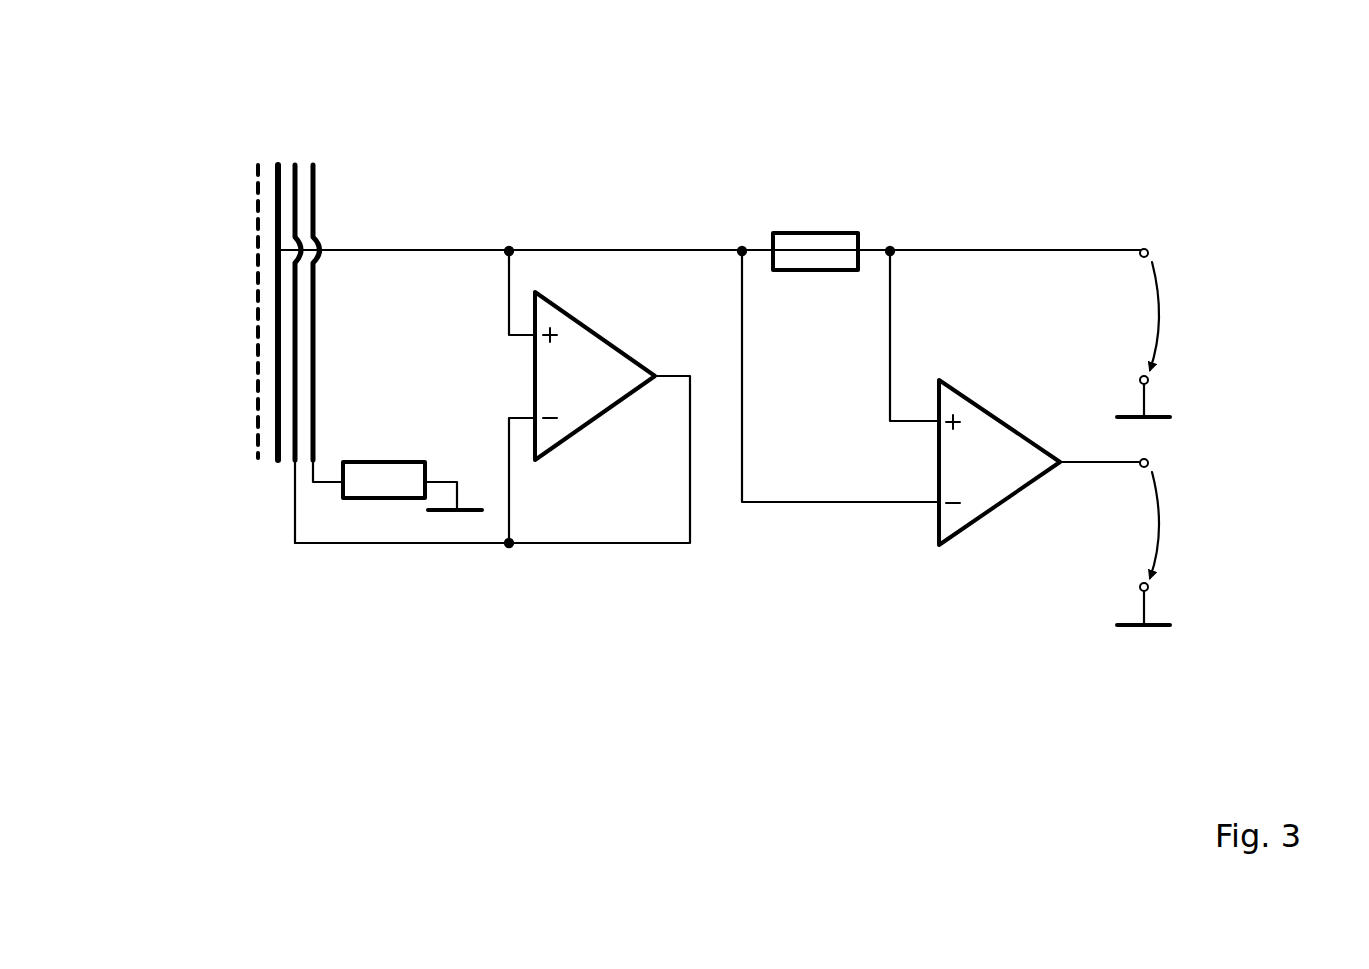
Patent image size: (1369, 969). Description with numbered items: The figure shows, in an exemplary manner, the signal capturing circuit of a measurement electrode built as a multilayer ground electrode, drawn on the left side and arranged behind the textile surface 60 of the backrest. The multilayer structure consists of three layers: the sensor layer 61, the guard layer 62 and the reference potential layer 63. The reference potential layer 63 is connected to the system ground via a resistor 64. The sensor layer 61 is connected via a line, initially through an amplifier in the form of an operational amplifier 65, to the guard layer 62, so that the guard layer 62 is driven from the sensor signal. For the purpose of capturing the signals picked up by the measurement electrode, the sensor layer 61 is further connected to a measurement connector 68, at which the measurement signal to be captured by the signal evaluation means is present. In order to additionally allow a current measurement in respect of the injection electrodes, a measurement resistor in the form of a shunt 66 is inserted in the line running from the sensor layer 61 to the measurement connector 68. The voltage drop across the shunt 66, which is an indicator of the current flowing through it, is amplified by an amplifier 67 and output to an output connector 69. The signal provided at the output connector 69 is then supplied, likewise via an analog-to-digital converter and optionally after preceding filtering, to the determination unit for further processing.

The textile surface 60 is at (255, 187).
The sensor layer 61 is at (275, 165).
The guard layer 62 is at (293, 165).
The reference potential layer 63 is at (312, 165).
The resistor 64 is at (410, 462).
The operational amplifier 65 is at (587, 425).
The shunt 66 is at (812, 272).
The amplifier 67 is at (983, 515).
The measurement connector 68 is at (1150, 250).
The output connector 69 is at (1150, 458).